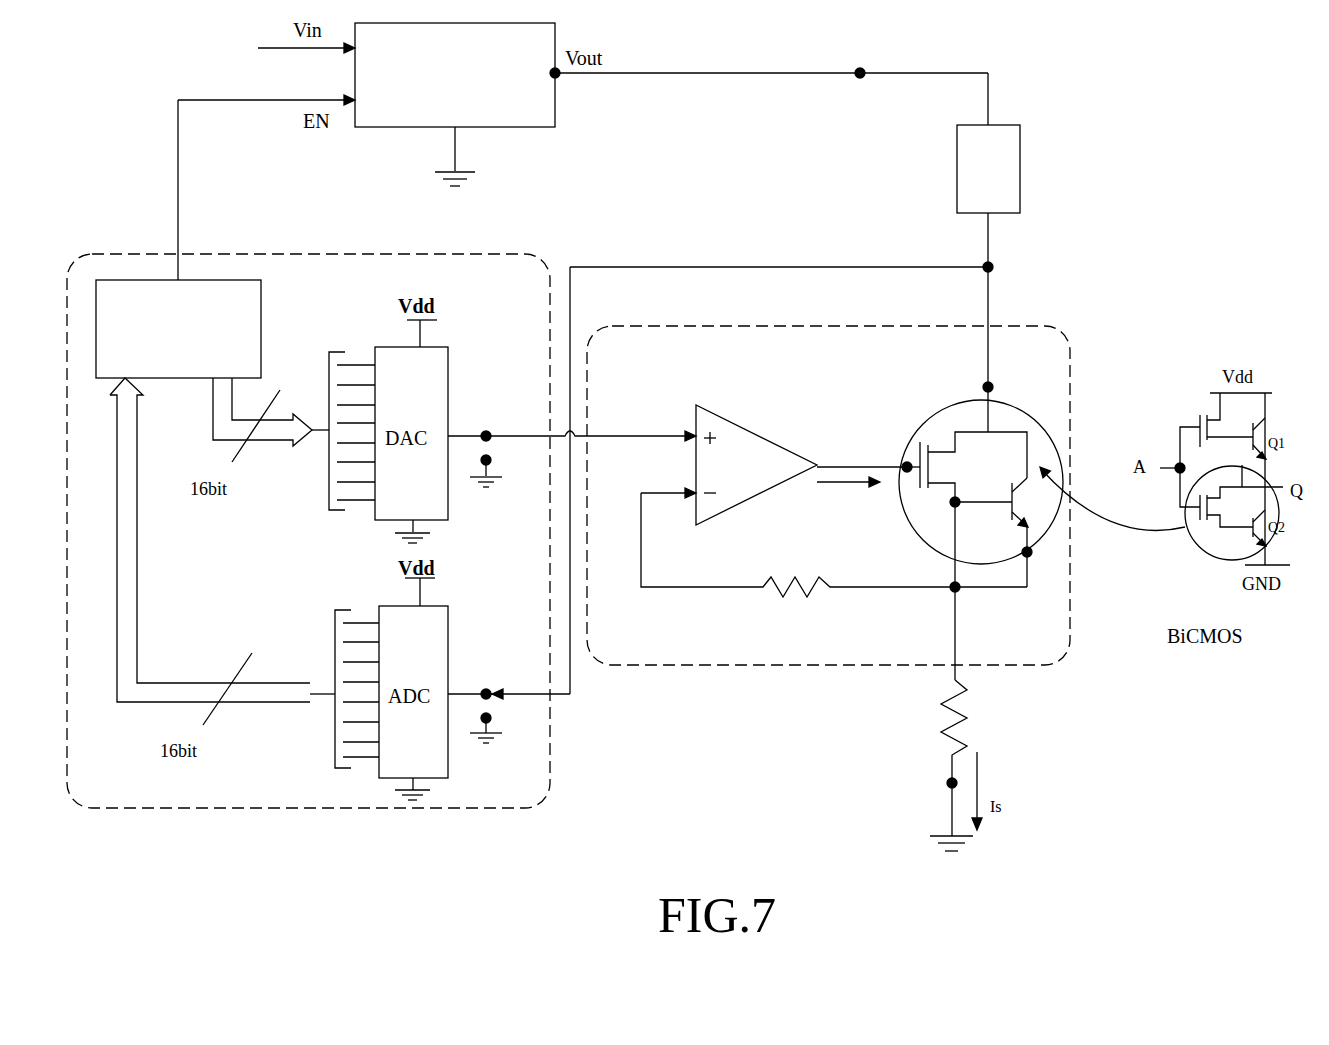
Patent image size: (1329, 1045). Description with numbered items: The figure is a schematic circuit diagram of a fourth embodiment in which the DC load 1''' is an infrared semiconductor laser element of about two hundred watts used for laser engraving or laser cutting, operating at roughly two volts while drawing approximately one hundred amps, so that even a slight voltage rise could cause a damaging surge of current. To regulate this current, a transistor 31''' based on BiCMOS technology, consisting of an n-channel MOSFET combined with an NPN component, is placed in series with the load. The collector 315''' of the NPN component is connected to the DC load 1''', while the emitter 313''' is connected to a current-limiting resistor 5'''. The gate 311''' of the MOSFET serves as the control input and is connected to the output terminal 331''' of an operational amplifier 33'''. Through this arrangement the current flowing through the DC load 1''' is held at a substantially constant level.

The DC load 1''' is at (1017, 141).
The transistor 31''' is at (981, 474).
The operational amplifier 33''' is at (759, 457).
The gate 311''' is at (889, 487).
The emitter 313''' is at (902, 591).
The collector 315''' is at (945, 349).
The output terminal 331''' is at (862, 448).
The current-limiting resistor 5''' is at (989, 756).